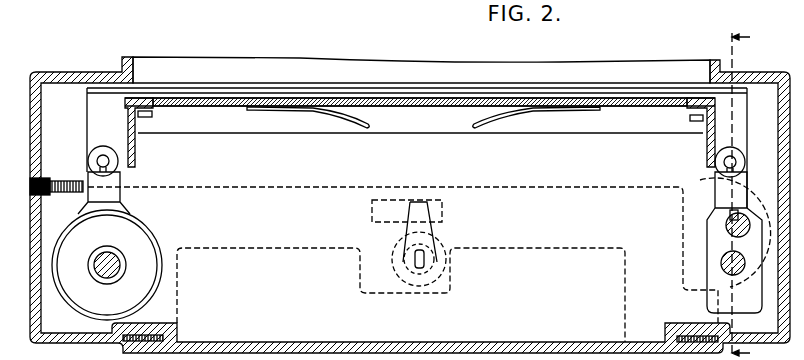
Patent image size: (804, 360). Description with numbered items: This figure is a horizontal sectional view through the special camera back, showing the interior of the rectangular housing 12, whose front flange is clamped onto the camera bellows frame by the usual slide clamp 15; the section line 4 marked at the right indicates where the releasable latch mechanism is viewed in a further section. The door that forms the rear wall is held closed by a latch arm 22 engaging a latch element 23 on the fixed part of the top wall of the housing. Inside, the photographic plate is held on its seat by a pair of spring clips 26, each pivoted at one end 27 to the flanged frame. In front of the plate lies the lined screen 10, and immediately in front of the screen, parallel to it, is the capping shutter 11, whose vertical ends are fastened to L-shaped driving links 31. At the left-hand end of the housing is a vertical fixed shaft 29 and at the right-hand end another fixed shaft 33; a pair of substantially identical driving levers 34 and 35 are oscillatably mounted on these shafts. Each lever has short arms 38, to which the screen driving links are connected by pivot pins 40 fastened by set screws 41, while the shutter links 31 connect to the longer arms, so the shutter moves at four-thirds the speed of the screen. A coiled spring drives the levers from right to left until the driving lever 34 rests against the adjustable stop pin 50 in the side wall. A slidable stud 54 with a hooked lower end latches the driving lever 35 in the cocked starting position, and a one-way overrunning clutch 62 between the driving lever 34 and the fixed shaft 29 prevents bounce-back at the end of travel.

The section line 4- 4 is at (749, 195).
The lined screen 10 is at (398, 100).
The capping shutter 11 is at (358, 94).
The rectangular housing 12 is at (247, 3).
The slide clamp 15 is at (358, 10).
The latch arm 22 is at (407, 230).
The latch element 23 is at (372, 205).
The spring clips 26 is at (317, 108).
The pivot end 27 is at (148, 120).
The fixed shaft 29 is at (117, 258).
The L-shaped driving links 31 is at (90, 104).
The fixed shaft 33 is at (722, 264).
The driving lever 34 is at (115, 194).
The driving lever 35 is at (720, 200).
The short arms 38 is at (88, 175).
The pivot pins 40 is at (100, 158).
The set screws 41 is at (118, 173).
The adjustable stop pin 50 is at (56, 196).
The stud 54 is at (749, 211).
The one-way overrunning clutch 62 is at (163, 285).